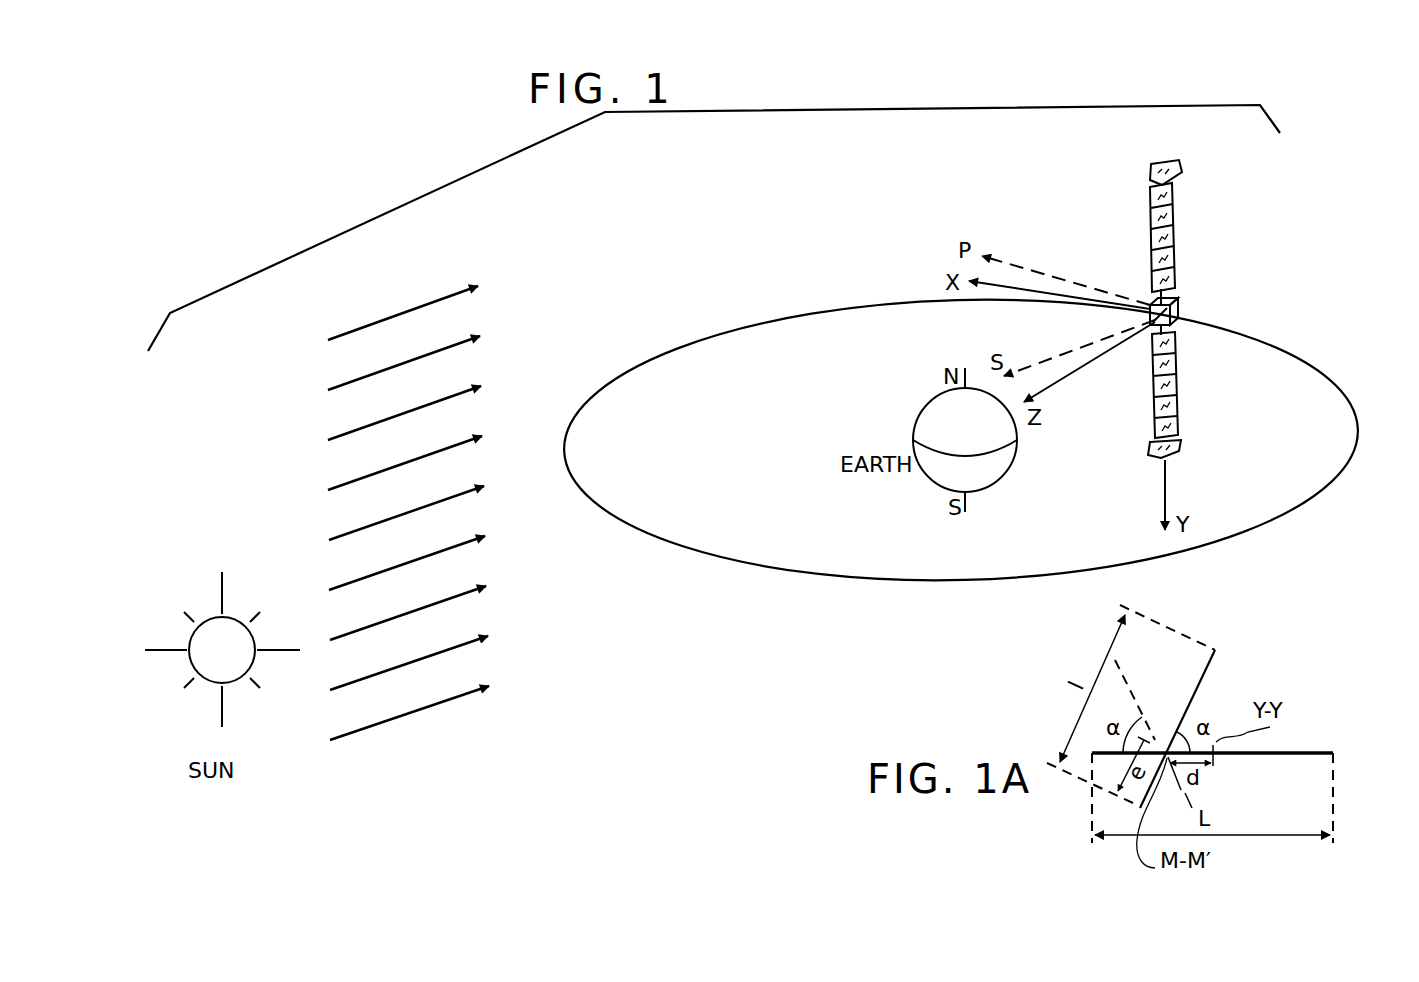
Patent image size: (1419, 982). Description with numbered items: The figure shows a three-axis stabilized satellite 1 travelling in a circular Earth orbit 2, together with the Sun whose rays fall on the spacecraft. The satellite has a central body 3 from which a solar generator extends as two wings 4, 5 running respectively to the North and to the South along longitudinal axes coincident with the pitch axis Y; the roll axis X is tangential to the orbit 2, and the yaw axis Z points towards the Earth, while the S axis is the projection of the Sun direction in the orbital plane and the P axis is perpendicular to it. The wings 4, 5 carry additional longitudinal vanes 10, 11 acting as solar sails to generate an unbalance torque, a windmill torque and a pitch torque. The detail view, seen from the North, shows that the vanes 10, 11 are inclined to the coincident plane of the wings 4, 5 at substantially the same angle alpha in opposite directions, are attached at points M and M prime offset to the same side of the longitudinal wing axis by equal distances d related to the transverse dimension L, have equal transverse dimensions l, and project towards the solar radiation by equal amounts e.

In FIG. 1, the satellite 1 is at (1197, 270).
In FIG. 1, the circular Earth orbit 2 is at (1267, 523).
In FIG. 1, the central body 3 is at (1180, 310).
In FIG. 1, the solar generator wing 4 is at (1150, 238).
In FIG. 1A, the solar generator wing 4 is at (1229, 719).
In FIG. 1, the solar generator wing 5 is at (1152, 405).
In FIG. 1A, the solar generator wing 5 is at (1300, 751).
In FIG. 1, the additional longitudinal vane 10 is at (1178, 170).
In FIG. 1A, the additional longitudinal vane 10 is at (1200, 687).
In FIG. 1, the additional longitudinal vane 11 is at (1182, 447).
In FIG. 1A, the additional longitudinal vane 11 is at (1192, 797).